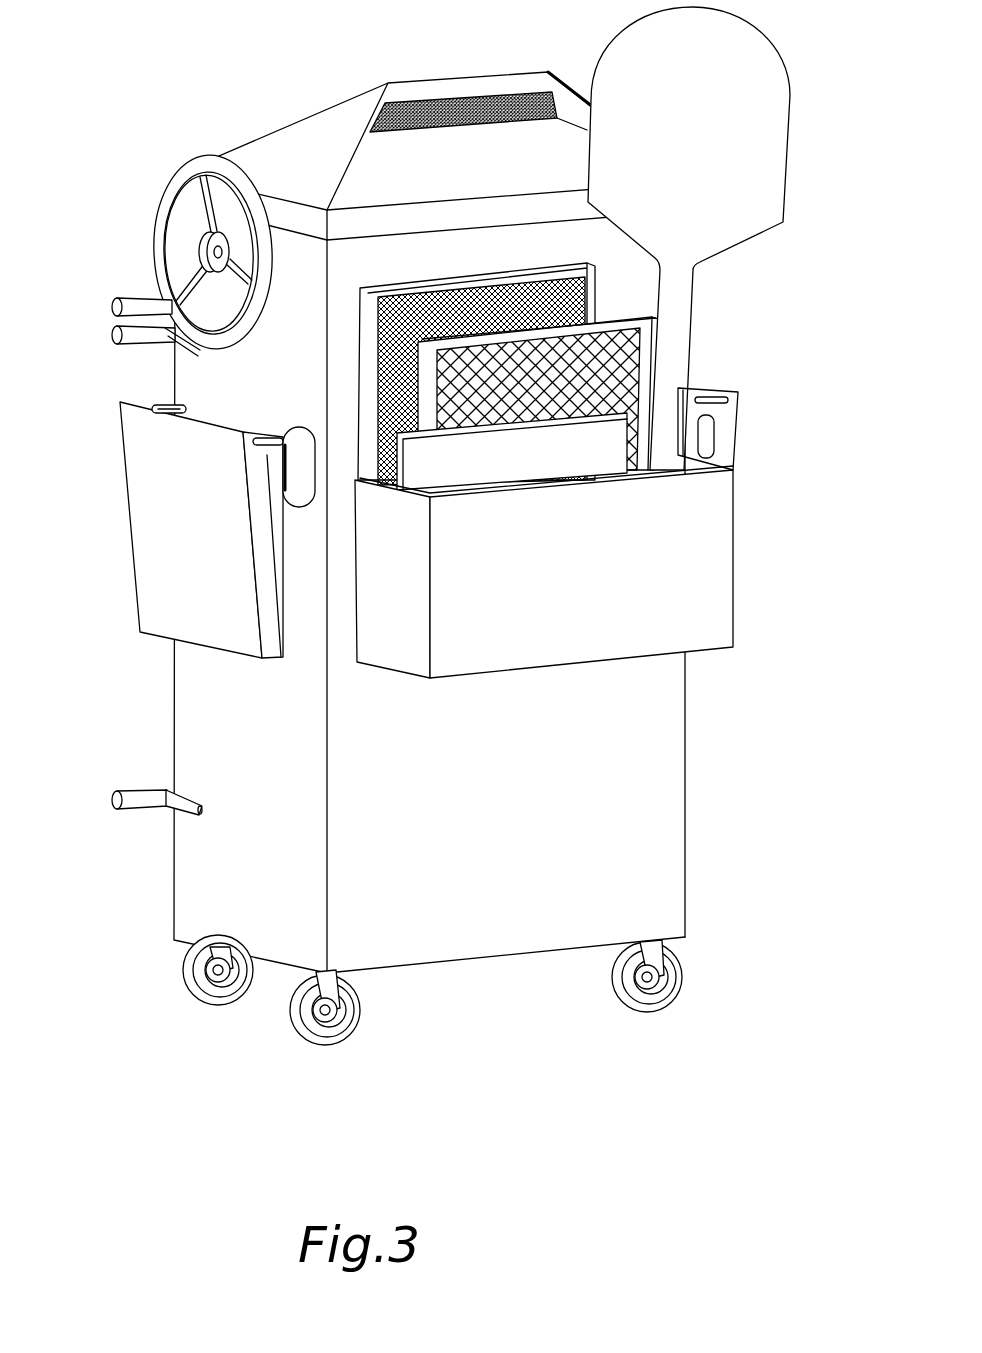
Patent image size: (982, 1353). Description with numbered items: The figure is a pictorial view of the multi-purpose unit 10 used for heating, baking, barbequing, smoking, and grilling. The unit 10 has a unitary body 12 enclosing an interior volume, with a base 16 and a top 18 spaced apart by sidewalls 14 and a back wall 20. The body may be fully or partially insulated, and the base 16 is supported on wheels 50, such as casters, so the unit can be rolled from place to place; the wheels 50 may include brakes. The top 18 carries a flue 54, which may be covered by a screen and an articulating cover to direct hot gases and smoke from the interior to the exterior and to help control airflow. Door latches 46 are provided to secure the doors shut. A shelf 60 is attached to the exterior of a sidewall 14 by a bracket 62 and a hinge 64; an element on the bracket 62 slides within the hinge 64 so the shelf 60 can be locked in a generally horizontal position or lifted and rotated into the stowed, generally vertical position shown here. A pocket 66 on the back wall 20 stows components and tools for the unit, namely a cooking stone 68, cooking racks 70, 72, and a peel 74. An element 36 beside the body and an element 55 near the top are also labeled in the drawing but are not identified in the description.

The multi-purpose unit 10 is at (280, 42).
The unitary body 12 is at (566, 203).
The sidewalls 14 is at (210, 742).
The base 16 is at (505, 958).
The top 18 is at (310, 123).
The back wall 20 is at (622, 747).
The hand wheel 36 is at (150, 158).
The door latch 46 is at (117, 333).
The wheels 50 is at (187, 982).
The flue 54 is at (560, 95).
The top edge 55 is at (518, 75).
The shelf 60 is at (733, 445).
The bracket 62 is at (305, 477).
The hinge 64 is at (163, 407).
The pocket 66 is at (703, 527).
The cooking stone 68 is at (528, 468).
The cooking rack 70 is at (627, 317).
The cooking rack 72 is at (407, 283).
The peel 74 is at (757, 128).